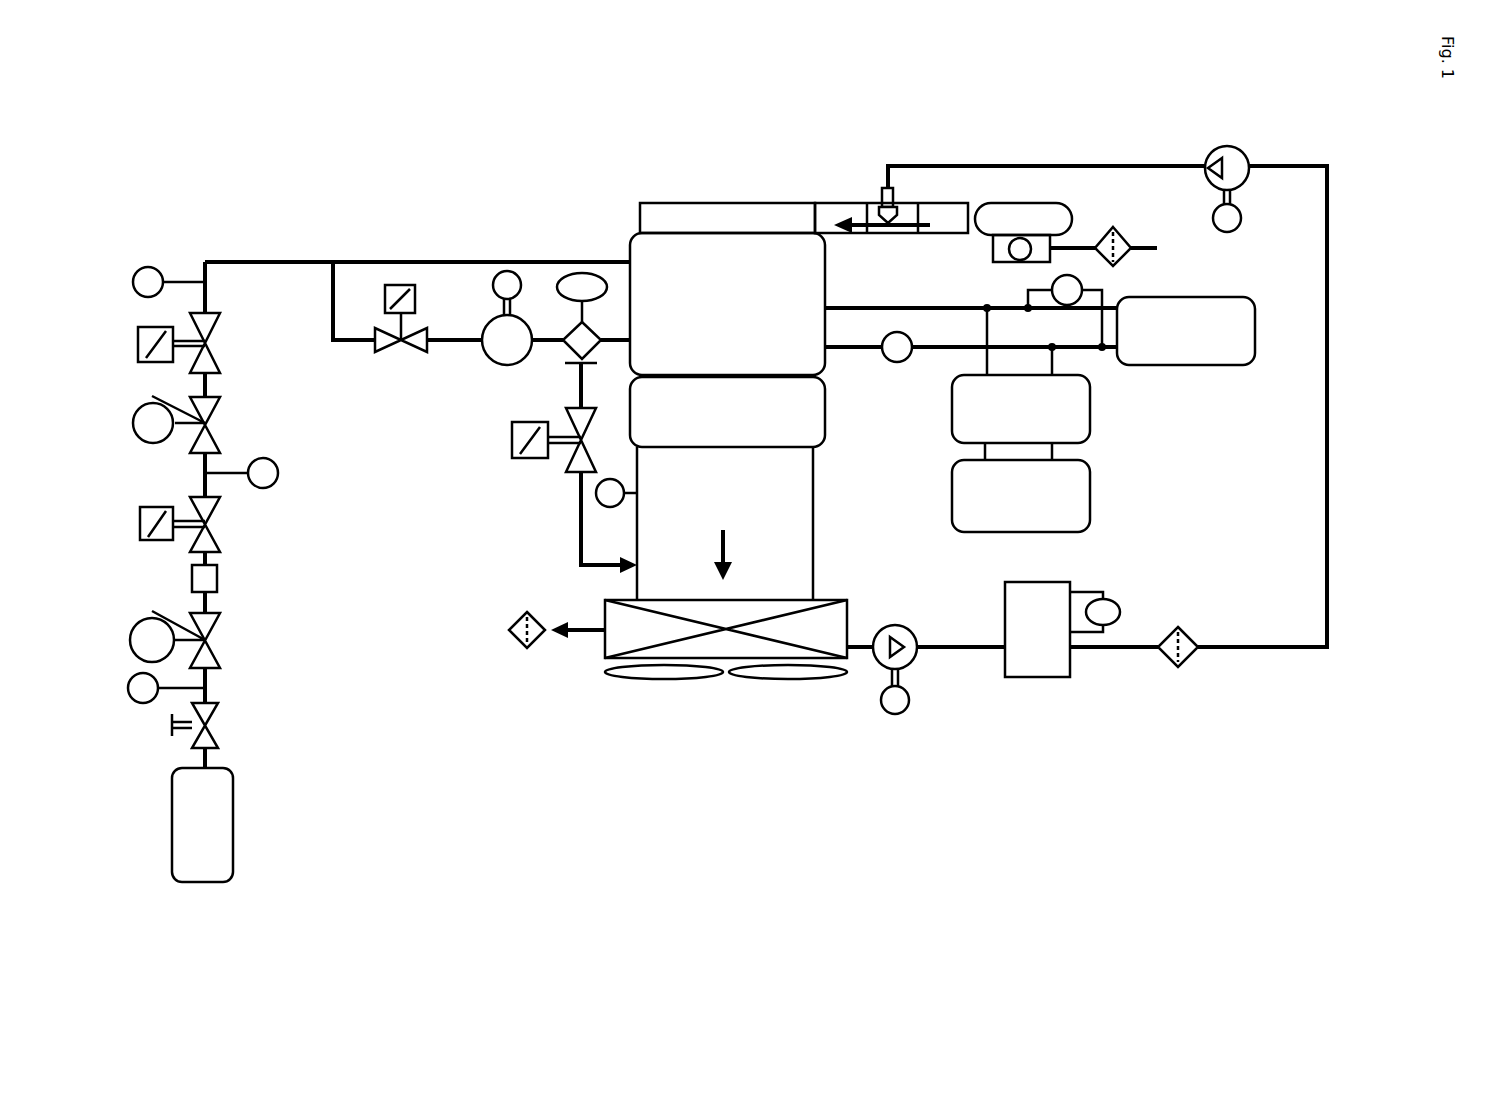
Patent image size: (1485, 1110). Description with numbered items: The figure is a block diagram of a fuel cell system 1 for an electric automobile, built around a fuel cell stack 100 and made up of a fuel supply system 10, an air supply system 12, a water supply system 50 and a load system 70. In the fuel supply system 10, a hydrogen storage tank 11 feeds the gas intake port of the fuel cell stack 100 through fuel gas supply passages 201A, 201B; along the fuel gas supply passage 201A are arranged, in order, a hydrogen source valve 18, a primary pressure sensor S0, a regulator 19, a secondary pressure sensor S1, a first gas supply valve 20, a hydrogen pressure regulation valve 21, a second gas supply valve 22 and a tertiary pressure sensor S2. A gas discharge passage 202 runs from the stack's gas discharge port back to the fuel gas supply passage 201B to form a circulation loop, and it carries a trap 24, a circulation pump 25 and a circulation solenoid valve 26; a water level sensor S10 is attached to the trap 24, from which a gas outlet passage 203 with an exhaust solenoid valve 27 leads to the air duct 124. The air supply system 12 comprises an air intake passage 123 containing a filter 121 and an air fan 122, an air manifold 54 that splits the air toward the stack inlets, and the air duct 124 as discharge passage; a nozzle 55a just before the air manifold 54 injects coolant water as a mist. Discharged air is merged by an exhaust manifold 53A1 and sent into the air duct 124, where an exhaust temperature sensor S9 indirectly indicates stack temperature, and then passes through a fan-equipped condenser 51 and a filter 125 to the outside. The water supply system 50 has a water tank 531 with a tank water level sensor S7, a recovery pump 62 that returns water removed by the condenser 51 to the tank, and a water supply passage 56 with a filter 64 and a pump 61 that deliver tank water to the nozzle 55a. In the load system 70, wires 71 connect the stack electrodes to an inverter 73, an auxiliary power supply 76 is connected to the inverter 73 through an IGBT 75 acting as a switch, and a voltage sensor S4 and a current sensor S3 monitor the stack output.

The fuel cell system 1 is at (422, 194).
The fuel supply system 10 is at (327, 710).
The hydrogen storage tank 11 is at (233, 838).
The air supply system 12 is at (648, 182).
The hydrogen source valve 18 is at (218, 720).
The regulator 19 is at (220, 624).
The first gas supply valve 20 is at (220, 532).
The hydrogen pressure regulation valve 21 is at (220, 410).
The second gas supply valve 22 is at (220, 330).
The trap 24 is at (600, 348).
The circulation pump 25 is at (487, 358).
The circulation solenoid valve 26 is at (411, 352).
The exhaust solenoid valve 27 is at (563, 466).
The water supply system 50 is at (1046, 700).
The condenser 51 is at (773, 686).
The exhaust manifold 53A1 is at (825, 432).
The air manifold 54 is at (745, 203).
The nozzle 55a is at (880, 196).
The water supply passage 56 is at (1288, 182).
The air pump 61 is at (1245, 151).
The recovery pump 62 is at (900, 625).
The filter 64 is at (1155, 667).
The load system 70 is at (1197, 457).
The wires 71 is at (882, 306).
The inverter 73 is at (1228, 297).
The insulated gate bipolar transistor (IGBT) 75 is at (1090, 395).
The auxiliary power supply 76 is at (1090, 483).
The fuel cell stack 100 is at (630, 238).
The filter 121 is at (1127, 233).
The air fan 122 is at (1072, 216).
The air intake passage 123 is at (948, 237).
The air duct 124 is at (818, 528).
The filter 125 is at (518, 646).
The fuel gas supply passage 201A is at (212, 675).
The fuel gas supply passage 201B is at (270, 261).
The gas discharge passage 202 is at (333, 345).
The gas outlet passage 203 is at (578, 534).
The water tank 531 is at (993, 672).
The primary pressure sensor S0 is at (140, 703).
The secondary pressure sensor S1 is at (278, 478).
The tertiary pressure sensor S2 is at (152, 267).
The current sensor S3 is at (905, 362).
The voltage sensor S4 is at (1080, 280).
The tank water level sensor S7 is at (1112, 601).
The exhaust temperature sensor S9 is at (607, 510).
The water level sensor S10 is at (578, 264).